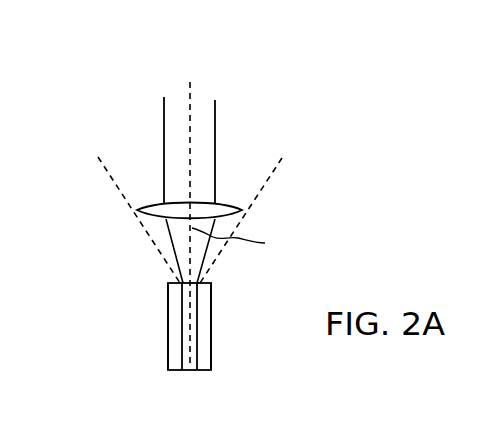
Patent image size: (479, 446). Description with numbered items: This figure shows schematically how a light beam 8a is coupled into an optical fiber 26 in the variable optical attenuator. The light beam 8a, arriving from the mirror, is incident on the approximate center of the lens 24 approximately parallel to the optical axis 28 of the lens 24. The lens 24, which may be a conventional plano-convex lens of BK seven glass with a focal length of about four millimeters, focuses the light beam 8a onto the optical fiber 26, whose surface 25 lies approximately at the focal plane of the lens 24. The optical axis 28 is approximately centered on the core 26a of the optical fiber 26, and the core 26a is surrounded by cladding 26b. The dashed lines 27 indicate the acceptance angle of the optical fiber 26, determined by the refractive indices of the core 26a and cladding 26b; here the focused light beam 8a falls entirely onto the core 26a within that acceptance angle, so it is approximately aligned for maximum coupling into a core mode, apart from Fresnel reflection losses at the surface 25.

The optical axis 28 is at (191, 140).
The light beam 8a is at (217, 158).
The lens 24 is at (137, 211).
The dashed lines 27 is at (102, 165).
The surface 25 is at (177, 278).
The optical fiber 26 is at (143, 320).
The core 26a is at (193, 359).
The cladding 26b is at (203, 318).